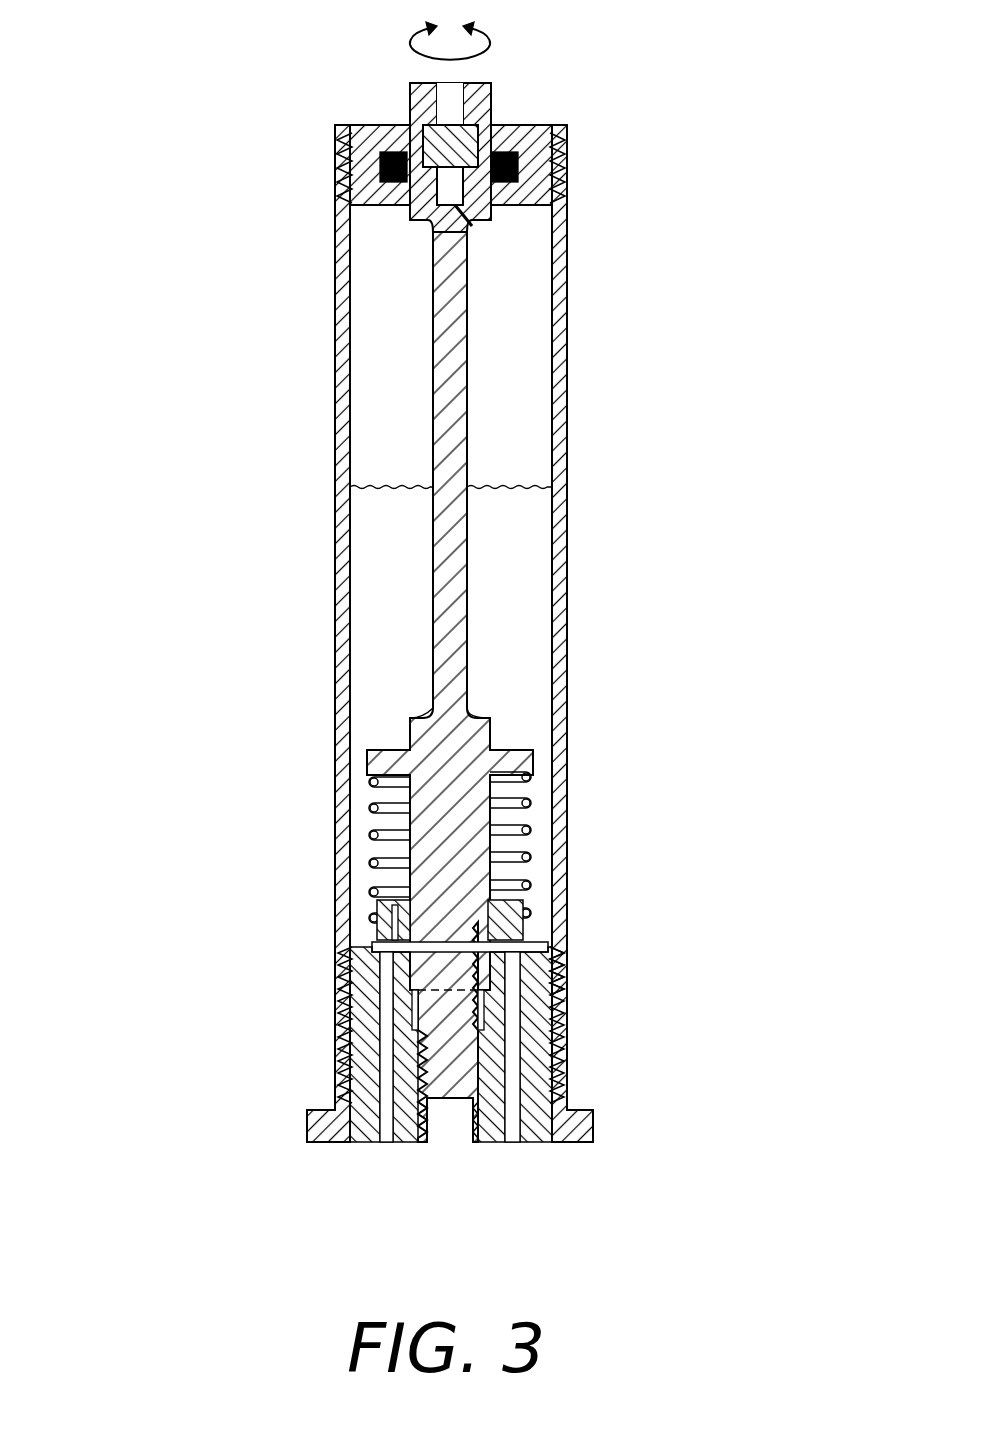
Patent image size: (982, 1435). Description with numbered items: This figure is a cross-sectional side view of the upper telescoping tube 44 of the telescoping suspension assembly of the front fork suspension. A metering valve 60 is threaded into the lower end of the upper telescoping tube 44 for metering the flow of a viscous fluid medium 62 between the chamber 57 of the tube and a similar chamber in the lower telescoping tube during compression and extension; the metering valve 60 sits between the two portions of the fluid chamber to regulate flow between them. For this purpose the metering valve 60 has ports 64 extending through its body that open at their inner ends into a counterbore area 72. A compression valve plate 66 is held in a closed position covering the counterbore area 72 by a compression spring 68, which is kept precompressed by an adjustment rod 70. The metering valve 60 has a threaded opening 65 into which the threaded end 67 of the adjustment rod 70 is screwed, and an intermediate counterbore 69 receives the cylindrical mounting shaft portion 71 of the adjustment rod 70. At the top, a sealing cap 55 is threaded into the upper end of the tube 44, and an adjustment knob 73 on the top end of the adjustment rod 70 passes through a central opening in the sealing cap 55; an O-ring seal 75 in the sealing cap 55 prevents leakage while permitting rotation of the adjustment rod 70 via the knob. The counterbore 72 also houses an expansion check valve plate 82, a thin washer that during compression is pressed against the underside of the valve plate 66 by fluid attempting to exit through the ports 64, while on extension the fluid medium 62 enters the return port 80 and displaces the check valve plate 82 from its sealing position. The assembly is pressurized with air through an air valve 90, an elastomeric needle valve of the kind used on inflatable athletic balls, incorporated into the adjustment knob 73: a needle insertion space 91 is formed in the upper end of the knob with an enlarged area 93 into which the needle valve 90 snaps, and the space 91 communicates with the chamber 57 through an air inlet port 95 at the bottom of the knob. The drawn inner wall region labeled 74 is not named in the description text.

The upper telescoping tube 44 is at (568, 673).
The sealing cap 55 is at (353, 197).
The chamber 57 is at (375, 297).
The metering valve 60 is at (537, 1065).
The viscous fluid medium 62 is at (520, 556).
The ports 64 is at (383, 1133).
The threaded opening 65 is at (437, 1143).
The compression valve plate 66 is at (373, 932).
The threaded end 67 is at (448, 1143).
The compression spring 68 is at (375, 808).
The intermediate counterbore 69 is at (412, 1010).
The adjustment rod 70 is at (437, 730).
The cylindrical mounting shaft portion 71 is at (473, 810).
The counterbore area 72 is at (565, 968).
The adjustment knob 73 is at (493, 95).
The inner cylinder wall 74 is at (372, 393).
The O-ring seal 75 is at (560, 181).
The return port 80 is at (375, 905).
The expansion check valve plate 82 is at (525, 935).
The air valve 90 is at (492, 127).
The needle insertion space 91 is at (437, 95).
The enlarged area 93 is at (412, 140).
The air inlet port 95 is at (457, 212).